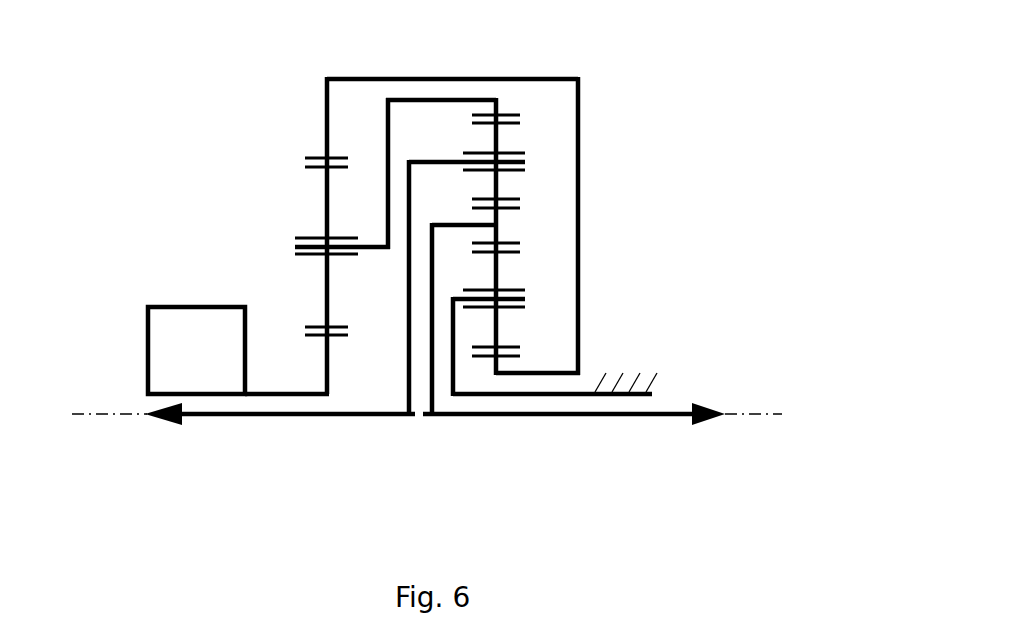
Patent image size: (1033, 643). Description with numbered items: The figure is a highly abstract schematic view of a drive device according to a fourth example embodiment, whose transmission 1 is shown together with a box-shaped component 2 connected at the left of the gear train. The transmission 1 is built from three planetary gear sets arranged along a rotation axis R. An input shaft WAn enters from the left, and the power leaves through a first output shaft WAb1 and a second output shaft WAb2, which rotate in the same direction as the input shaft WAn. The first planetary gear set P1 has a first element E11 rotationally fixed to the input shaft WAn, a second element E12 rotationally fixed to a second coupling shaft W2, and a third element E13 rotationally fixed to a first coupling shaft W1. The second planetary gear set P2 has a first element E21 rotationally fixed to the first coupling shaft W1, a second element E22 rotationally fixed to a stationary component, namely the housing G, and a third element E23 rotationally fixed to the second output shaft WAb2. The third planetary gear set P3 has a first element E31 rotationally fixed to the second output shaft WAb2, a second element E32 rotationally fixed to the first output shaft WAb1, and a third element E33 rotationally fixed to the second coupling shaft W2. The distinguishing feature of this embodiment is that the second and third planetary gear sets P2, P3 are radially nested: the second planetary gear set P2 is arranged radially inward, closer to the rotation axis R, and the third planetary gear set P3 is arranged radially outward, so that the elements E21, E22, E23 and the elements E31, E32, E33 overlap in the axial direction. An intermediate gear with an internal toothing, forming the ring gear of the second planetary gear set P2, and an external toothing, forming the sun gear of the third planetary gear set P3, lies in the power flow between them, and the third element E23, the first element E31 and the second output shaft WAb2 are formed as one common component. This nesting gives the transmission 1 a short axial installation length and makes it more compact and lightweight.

The transmission 1 is at (169, 89).
The electric machine 2 is at (168, 312).
The first coupling shaft W1 is at (580, 100).
The second coupling shaft W2 is at (388, 100).
The first planetary gear set P1 is at (316, 440).
The second planetary gear set P2 is at (500, 440).
The third planetary gear set P3 is at (519, 91).
The input shaft WAn is at (262, 394).
The first output shaft WAb1 is at (205, 418).
The second output shaft WAb2 is at (606, 418).
The rotation axis R is at (752, 418).
The housing G is at (648, 384).
The first element of the first planetary gear set E11 is at (327, 352).
The second element of the first planetary gear set E12 is at (296, 243).
The third element of the first planetary gear set E13 is at (317, 158).
The first element of the second planetary gear set E21 is at (495, 362).
The second element of the second planetary gear set E22 is at (525, 299).
The third element of the second planetary gear set E23 is at (520, 243).
The first element of the third planetary gear set E31 is at (520, 208).
The second element of the third planetary gear set E32 is at (525, 162).
The third element of the third planetary gear set E33 is at (496, 100).